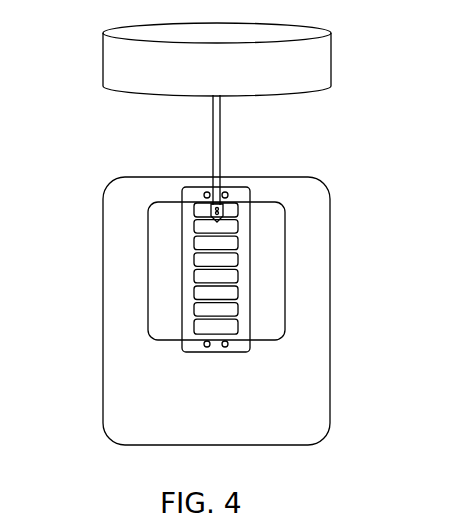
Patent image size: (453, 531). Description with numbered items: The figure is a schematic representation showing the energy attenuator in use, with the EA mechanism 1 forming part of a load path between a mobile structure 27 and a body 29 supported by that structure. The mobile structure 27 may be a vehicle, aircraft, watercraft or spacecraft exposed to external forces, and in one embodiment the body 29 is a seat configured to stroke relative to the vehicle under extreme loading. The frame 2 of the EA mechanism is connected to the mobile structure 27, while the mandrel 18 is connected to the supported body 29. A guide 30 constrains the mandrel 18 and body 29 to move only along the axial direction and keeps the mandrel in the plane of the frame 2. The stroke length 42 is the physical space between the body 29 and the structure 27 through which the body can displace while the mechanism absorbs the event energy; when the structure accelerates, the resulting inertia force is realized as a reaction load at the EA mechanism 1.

The EA mechanism 1 is at (158, 267).
The frame 2 is at (218, 352).
The mandrel 18 is at (223, 211).
The mobile structure 27 is at (330, 392).
The body 29 is at (230, 75).
The guide 30 is at (220, 148).
The stroke length 42 is at (88, 91).